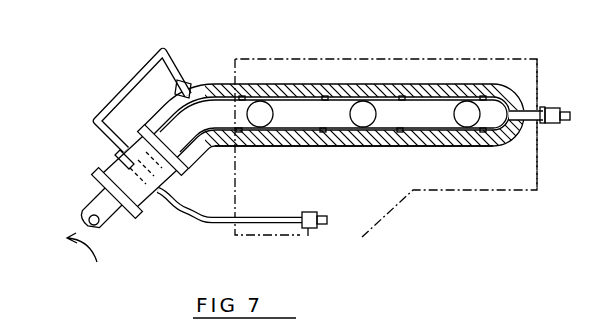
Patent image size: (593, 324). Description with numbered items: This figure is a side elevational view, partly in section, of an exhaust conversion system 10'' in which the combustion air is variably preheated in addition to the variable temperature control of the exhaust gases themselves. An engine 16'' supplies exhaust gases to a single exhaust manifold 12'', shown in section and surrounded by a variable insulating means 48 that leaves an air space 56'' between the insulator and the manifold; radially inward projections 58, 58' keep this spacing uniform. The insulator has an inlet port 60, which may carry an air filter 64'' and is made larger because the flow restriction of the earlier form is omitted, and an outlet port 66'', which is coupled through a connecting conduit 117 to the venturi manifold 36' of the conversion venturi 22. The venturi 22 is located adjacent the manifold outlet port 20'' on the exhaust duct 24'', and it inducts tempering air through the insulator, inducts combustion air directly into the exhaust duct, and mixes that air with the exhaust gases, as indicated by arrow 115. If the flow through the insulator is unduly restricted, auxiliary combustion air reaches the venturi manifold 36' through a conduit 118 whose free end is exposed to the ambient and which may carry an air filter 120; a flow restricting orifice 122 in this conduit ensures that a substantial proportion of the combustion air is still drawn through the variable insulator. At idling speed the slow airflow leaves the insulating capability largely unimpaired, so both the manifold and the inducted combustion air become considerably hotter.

The exhaust conversion system 10'' is at (386, 125).
The exhaust manifold 12'' is at (333, 96).
The engine 16'' is at (518, 107).
The manifold outlet port 20'' is at (169, 98).
The conversion venturi 22 is at (172, 170).
The exhaust duct 24'' is at (118, 217).
The venturi manifold 36' is at (102, 168).
The variable insulating means 48 is at (335, 85).
The air space 56'' is at (354, 158).
The projections 58 is at (361, 155).
The upper belt cleats 58' is at (362, 67).
The inlet port 60 is at (541, 108).
The air filter 64'' is at (568, 134).
The outlet port 66'' is at (195, 58).
The arrow 115 is at (89, 257).
The connecting conduit 117 is at (113, 93).
The auxiliary combustion air conduit 118 is at (250, 214).
The air filter 120 is at (308, 236).
The flow restricting orifice 122 is at (230, 228).